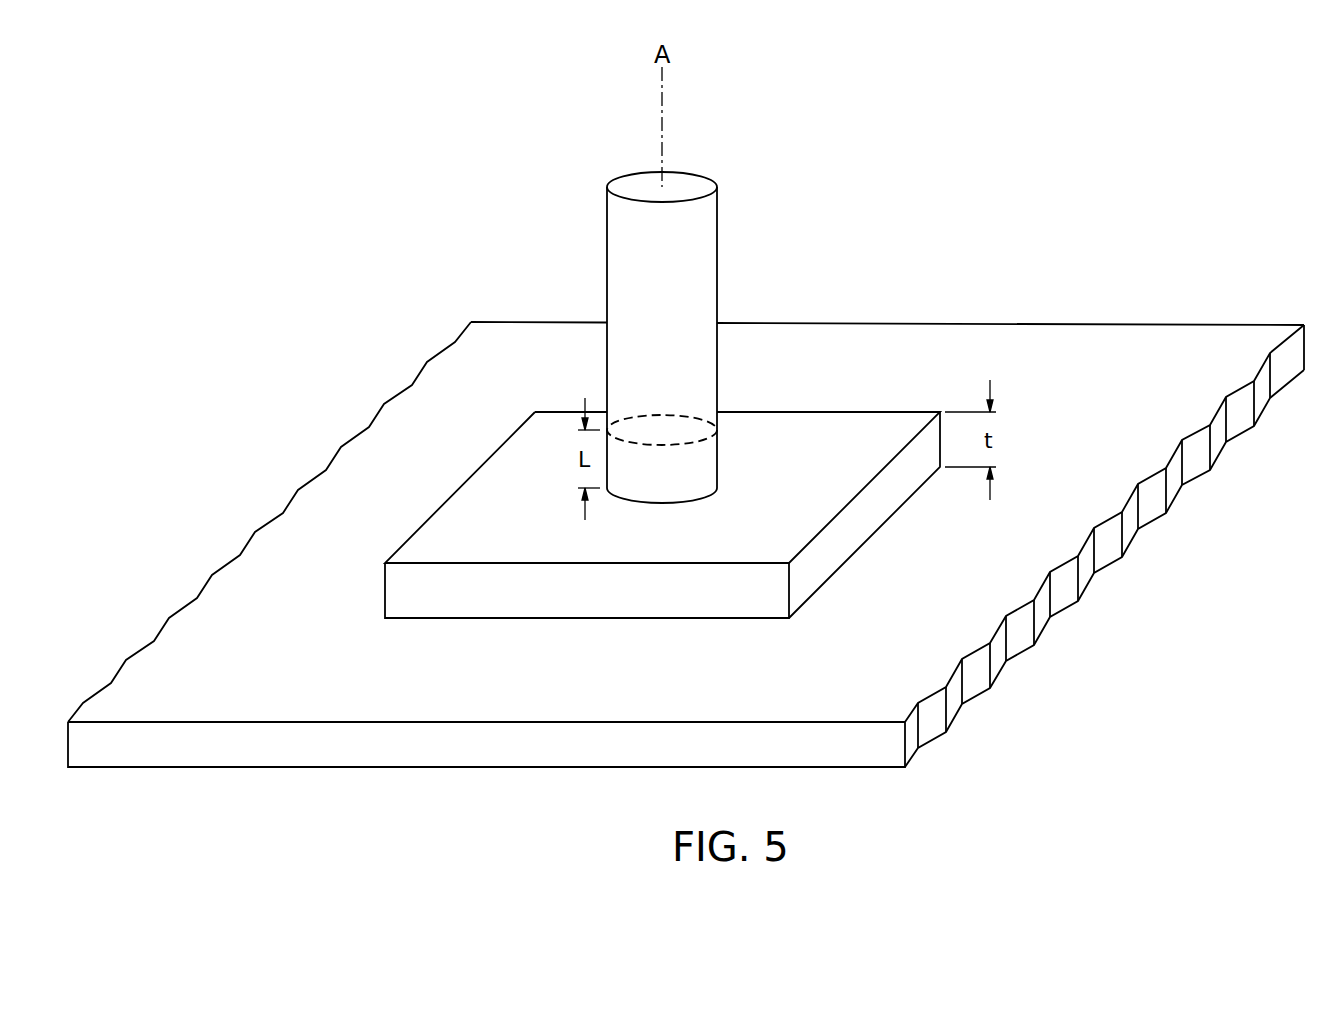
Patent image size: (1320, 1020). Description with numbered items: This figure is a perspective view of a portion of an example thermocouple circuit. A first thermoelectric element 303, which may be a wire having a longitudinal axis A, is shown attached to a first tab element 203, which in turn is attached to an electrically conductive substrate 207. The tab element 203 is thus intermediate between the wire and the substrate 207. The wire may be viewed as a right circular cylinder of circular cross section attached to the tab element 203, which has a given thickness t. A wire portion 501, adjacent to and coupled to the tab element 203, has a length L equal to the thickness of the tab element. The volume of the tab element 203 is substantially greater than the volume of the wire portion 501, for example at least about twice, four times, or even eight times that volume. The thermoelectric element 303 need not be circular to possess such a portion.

The electrically conductive substrate 207 is at (316, 522).
The first tab element 203 is at (517, 606).
The first thermoelectric element 303 is at (718, 258).
The wire portion 501 is at (700, 457).